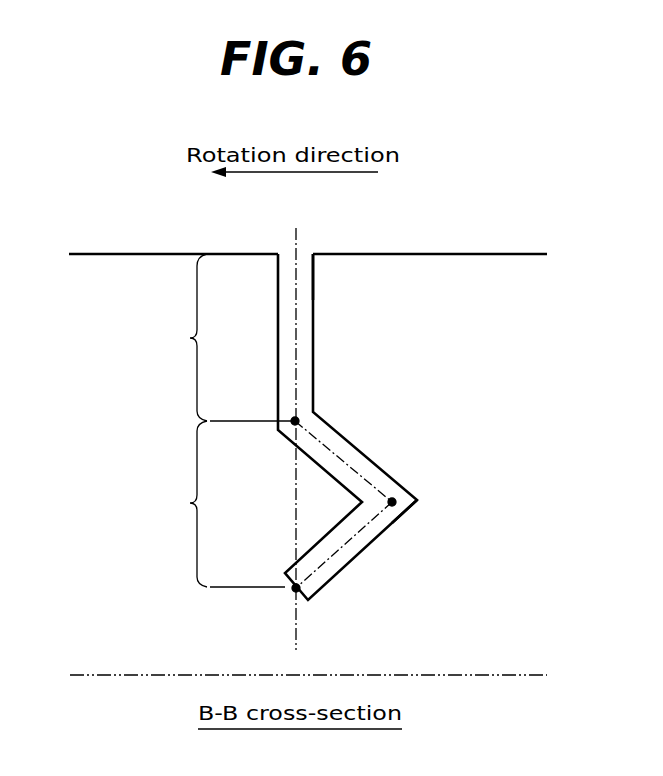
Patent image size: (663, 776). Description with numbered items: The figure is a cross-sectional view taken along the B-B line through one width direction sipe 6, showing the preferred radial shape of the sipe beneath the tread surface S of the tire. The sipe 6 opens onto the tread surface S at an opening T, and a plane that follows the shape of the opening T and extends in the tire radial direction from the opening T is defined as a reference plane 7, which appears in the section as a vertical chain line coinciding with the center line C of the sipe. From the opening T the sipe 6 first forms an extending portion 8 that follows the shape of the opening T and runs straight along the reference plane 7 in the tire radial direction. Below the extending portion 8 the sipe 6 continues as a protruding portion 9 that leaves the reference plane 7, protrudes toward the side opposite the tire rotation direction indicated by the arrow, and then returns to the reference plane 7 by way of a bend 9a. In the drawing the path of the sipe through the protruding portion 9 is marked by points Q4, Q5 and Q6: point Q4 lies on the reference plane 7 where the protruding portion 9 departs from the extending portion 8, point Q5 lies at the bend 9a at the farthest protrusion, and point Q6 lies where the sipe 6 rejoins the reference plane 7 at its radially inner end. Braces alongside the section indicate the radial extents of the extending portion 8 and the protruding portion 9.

The width direction sipe 6 is at (289, 268).
The reference plane 7 is at (296, 513).
The extending portion 8 is at (231, 337).
The protruding portion 9 is at (227, 504).
The bend 9a is at (410, 504).
The center axis C is at (295, 425).
The opening T is at (304, 253).
The tread surface S is at (485, 252).
The bend point Q4 is at (297, 419).
The bend point Q5 is at (394, 500).
The bend point Q6 is at (293, 591).